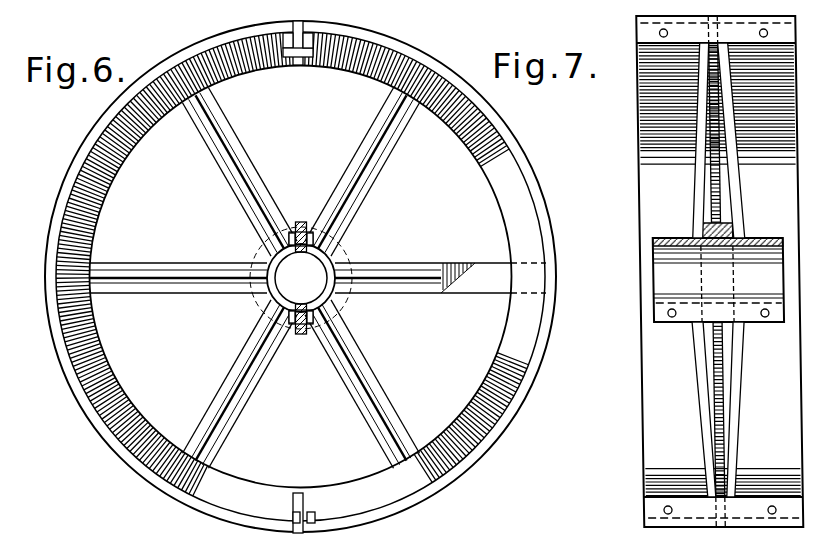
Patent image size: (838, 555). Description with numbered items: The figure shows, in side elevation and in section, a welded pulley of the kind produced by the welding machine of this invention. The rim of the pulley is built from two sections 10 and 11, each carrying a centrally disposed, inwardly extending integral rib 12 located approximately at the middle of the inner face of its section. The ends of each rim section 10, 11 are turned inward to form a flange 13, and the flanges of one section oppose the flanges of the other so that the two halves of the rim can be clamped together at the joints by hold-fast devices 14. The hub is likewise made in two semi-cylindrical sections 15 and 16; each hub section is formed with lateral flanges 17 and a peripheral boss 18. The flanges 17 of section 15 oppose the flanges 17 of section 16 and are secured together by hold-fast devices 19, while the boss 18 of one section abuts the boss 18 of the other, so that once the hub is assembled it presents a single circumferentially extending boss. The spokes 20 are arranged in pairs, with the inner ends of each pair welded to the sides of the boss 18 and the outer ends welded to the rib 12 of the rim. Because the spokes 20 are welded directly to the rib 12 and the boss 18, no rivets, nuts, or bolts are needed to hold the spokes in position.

In FIG. 6, the rim section 10 is at (176, 64).
In FIG. 6, the rim section 11 is at (454, 91).
In FIG. 6, the rib 12 is at (104, 184).
In FIG. 7, the rib 12 is at (719, 30).
In FIG. 6, the flange 13 is at (304, 58).
In FIG. 6, the hold-fast device 14 is at (293, 58).
In FIG. 6, the hub section 15 is at (326, 261).
In FIG. 6, the hub section 16 is at (278, 300).
In FIG. 6, the lateral flange 17 is at (305, 335).
In FIG. 6, the hold-fast device 19 is at (298, 333).
In FIG. 7, the peripheral boss 18 is at (736, 193).
In FIG. 7, the spoke 20 is at (692, 193).